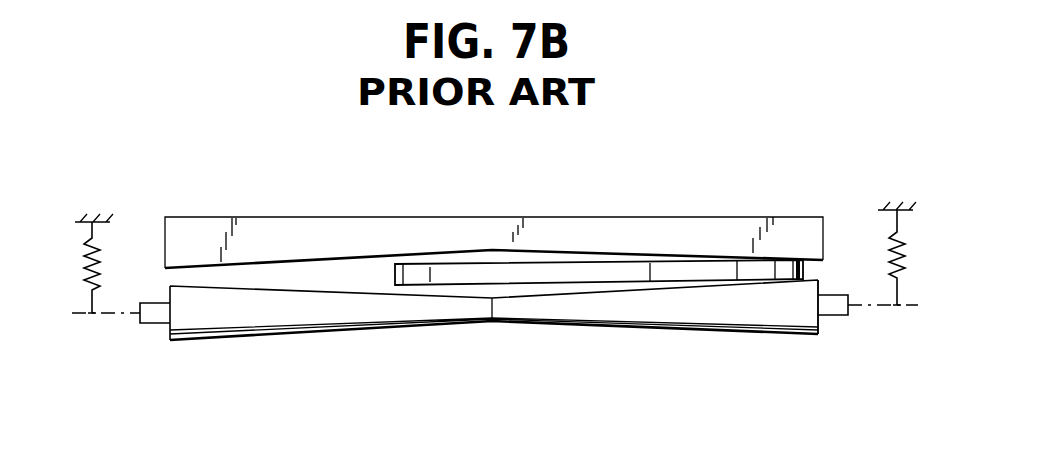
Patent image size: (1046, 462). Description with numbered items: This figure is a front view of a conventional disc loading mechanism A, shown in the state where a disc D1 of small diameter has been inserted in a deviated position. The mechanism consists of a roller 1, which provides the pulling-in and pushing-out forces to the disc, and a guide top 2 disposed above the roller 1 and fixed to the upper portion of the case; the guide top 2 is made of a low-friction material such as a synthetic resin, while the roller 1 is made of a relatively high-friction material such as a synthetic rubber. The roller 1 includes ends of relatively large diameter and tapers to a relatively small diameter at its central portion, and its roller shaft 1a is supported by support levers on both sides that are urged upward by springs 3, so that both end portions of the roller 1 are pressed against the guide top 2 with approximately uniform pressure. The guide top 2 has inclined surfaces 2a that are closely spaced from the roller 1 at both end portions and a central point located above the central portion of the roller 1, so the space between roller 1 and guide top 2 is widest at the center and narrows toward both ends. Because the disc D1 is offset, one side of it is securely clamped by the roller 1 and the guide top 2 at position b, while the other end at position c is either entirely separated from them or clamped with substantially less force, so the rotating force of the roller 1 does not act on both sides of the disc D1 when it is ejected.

The roller 1 is at (668, 313).
The roller shaft 1a is at (152, 323).
The guide top 2 is at (624, 228).
The inclined surfaces 2a is at (240, 214).
The springs 3 is at (103, 262).
The disc D1 is at (478, 270).
The disc loading mechanism A is at (252, 343).
The position b is at (802, 288).
The position c is at (400, 299).